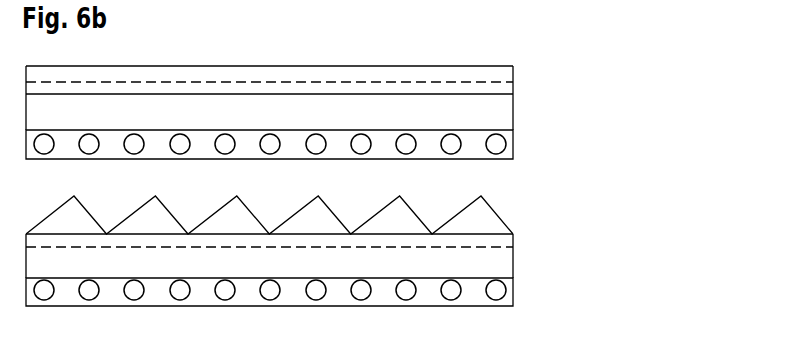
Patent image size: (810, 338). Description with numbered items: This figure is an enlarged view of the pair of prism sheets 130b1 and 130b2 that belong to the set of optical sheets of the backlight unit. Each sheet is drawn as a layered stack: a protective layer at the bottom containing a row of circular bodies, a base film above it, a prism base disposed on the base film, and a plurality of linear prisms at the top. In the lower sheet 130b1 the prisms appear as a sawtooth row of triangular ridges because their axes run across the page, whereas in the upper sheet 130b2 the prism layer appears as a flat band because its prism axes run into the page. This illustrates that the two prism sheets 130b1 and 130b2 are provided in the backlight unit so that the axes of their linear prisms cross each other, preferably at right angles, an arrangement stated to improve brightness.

The prism sheet 130b1 is at (376, 250).
The prism sheet 130b2 is at (375, 108).